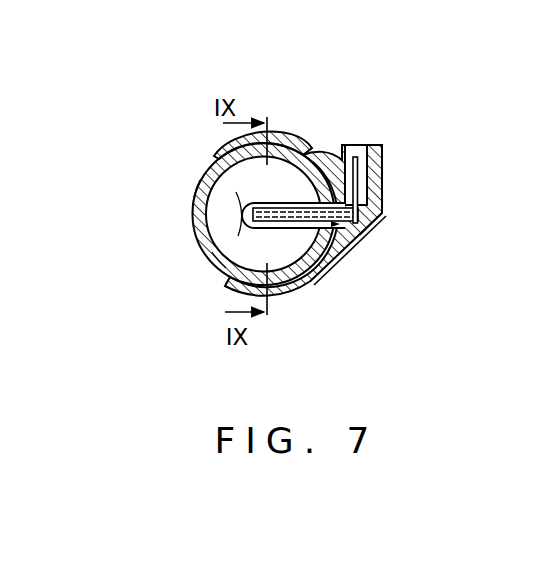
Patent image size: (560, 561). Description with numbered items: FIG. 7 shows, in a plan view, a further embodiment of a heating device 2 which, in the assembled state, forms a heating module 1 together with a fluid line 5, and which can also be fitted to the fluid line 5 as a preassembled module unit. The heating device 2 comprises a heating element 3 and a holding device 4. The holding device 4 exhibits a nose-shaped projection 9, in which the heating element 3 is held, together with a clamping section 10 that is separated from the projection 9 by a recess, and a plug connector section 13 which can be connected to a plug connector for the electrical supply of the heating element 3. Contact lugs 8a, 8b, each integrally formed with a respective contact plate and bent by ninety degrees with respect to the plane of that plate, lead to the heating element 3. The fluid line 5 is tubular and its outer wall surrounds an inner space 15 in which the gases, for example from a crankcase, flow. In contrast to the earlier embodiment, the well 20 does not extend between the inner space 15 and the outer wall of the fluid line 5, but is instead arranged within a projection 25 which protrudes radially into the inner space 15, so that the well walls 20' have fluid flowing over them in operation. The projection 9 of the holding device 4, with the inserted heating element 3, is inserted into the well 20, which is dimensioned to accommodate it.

The heating module 1 is at (155, 82).
The heating device 2 is at (443, 137).
The heating element 3 is at (330, 255).
The holding device 4 is at (389, 229).
The fluid line 5 is at (203, 242).
The contact lug 8a is at (337, 155).
The contact lug 8b is at (339, 158).
The nose-shaped projection 9 is at (298, 162).
The clamping section 10 is at (288, 133).
The plug connector section 13 is at (370, 145).
The inner space 15 is at (230, 200).
The well 20 is at (391, 279).
The well walls 20' is at (252, 212).
The projection 25 is at (220, 263).